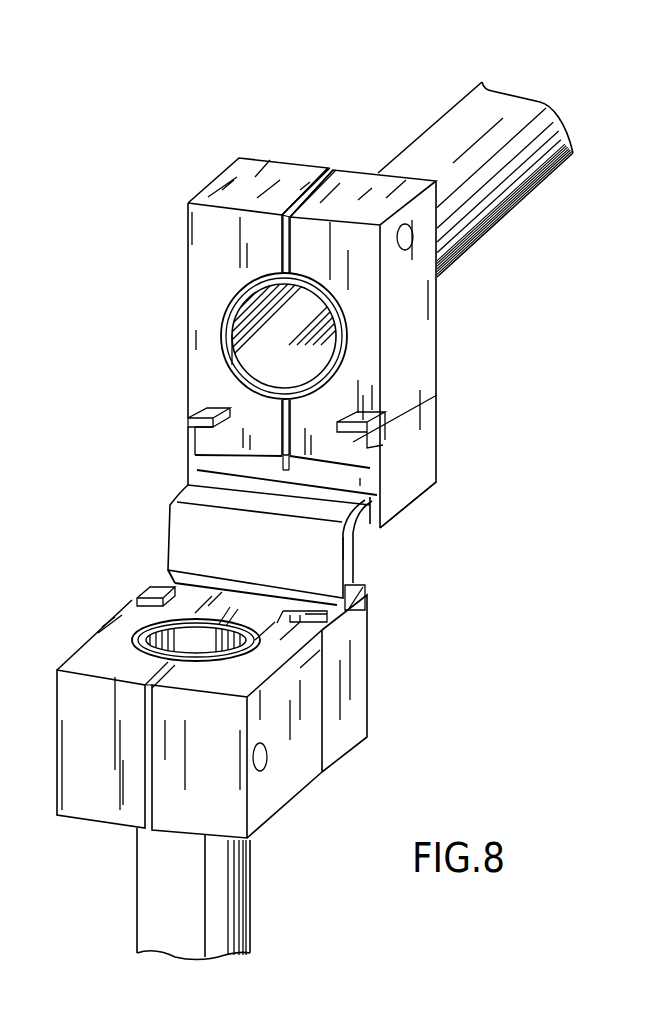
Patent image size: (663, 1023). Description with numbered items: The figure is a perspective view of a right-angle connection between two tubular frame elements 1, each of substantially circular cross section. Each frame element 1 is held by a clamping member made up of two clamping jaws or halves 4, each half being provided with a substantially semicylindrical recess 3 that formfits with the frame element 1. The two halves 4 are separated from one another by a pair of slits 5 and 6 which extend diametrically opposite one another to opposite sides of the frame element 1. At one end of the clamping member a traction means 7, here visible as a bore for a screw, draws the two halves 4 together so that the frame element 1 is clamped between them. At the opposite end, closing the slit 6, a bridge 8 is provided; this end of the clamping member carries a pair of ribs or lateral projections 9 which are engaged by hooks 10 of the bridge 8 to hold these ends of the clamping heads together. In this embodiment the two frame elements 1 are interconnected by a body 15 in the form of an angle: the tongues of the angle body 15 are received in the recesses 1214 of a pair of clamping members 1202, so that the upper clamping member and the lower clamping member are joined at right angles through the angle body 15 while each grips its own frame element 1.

The frame element 1 is at (250, 355).
The semicylindrical recess 3 is at (210, 311).
The clamping jaw 4 is at (205, 258).
The slit 5 is at (333, 170).
The slit 6 is at (247, 597).
The traction means 7 is at (408, 237).
The bridge 8 is at (222, 597).
The lateral projection 9 is at (212, 442).
The hook 10 is at (197, 426).
The body 15 is at (182, 517).
The member 1202 is at (416, 515).
The recess 1214 is at (371, 535).